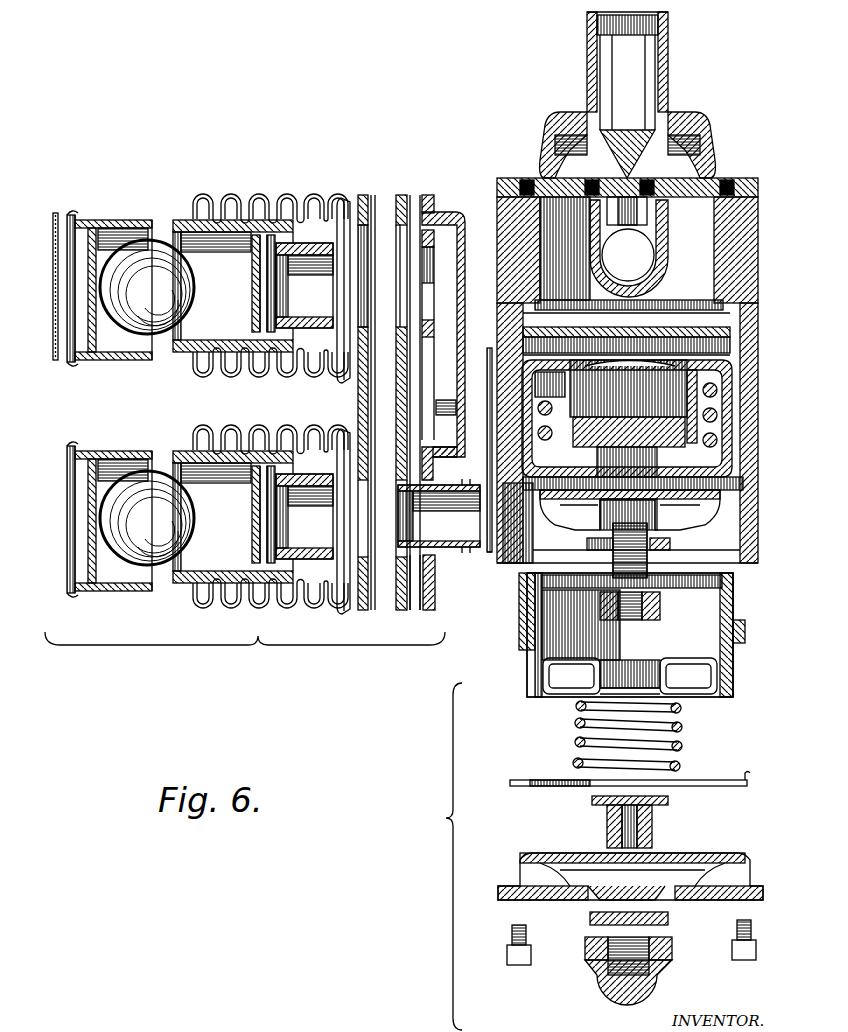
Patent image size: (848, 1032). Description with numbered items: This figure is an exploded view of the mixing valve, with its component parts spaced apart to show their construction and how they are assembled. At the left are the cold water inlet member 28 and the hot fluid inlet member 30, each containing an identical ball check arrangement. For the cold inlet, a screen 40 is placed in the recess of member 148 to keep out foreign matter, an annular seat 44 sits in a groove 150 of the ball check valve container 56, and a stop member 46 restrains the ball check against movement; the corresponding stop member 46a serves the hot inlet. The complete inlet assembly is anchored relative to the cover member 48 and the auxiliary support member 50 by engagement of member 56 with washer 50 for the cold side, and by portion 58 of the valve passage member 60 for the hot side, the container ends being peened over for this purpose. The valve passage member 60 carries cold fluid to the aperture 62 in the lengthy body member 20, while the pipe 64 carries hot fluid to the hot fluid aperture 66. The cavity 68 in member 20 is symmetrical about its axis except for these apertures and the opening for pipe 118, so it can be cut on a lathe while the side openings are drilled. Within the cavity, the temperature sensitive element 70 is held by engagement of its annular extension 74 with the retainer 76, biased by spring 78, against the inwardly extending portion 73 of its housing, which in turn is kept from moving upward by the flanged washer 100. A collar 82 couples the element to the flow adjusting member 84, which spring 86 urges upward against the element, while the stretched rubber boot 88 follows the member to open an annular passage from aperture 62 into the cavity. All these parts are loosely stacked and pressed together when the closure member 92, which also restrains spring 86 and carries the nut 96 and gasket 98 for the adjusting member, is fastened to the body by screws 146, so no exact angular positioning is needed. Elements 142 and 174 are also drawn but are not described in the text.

The lengthy body member 20 is at (752, 238).
The cold water inlet member 28 is at (280, 196).
The hot fluid inlet member 30 is at (285, 600).
The screen 40 is at (53, 257).
The annular seat 44 is at (115, 240).
The stop member 46 is at (245, 213).
The stop member 46a is at (245, 590).
The cover member 48 is at (364, 194).
The auxiliary support member 50 is at (400, 194).
The ball check valve container 56 is at (218, 210).
The portion of valve passage member 58 is at (436, 580).
The valve passage member 60 is at (466, 240).
The aperture 62 is at (497, 428).
The pipe 64 is at (448, 548).
The hot fluid aperture 66 is at (489, 554).
The cavity 68 is at (690, 238).
The temperature sensitive element 70 is at (712, 395).
The inwardly extending portion of housing 73 is at (735, 372).
The annular extension 74 is at (700, 540).
The retainer 76 is at (720, 510).
The spring 78 is at (716, 415).
The collar 82 is at (660, 606).
The flow adjusting member 84 is at (738, 660).
The spring 86 is at (684, 722).
The rubber boot 88 is at (742, 600).
The closure member 92 is at (752, 858).
The nut 96 is at (672, 946).
The gasket 98 is at (590, 922).
The washer 100 is at (705, 328).
The pipe 118 is at (662, 245).
The plate 142 is at (488, 350).
The screws 146 is at (531, 955).
The member 148 is at (88, 215).
The groove 150 is at (175, 216).
The stud 174 is at (668, 802).